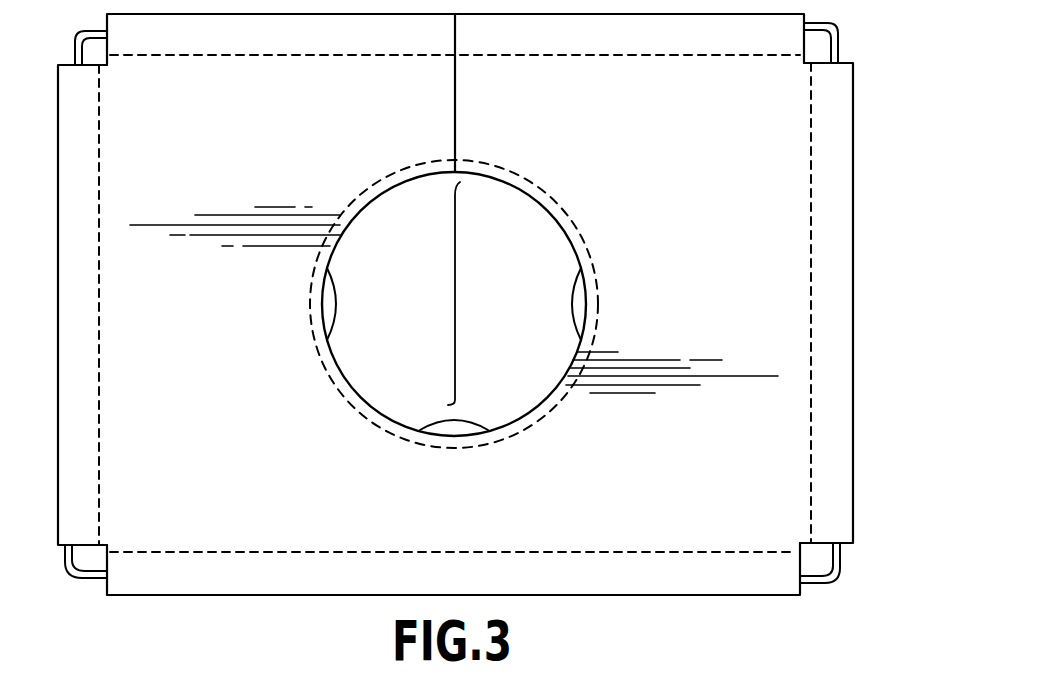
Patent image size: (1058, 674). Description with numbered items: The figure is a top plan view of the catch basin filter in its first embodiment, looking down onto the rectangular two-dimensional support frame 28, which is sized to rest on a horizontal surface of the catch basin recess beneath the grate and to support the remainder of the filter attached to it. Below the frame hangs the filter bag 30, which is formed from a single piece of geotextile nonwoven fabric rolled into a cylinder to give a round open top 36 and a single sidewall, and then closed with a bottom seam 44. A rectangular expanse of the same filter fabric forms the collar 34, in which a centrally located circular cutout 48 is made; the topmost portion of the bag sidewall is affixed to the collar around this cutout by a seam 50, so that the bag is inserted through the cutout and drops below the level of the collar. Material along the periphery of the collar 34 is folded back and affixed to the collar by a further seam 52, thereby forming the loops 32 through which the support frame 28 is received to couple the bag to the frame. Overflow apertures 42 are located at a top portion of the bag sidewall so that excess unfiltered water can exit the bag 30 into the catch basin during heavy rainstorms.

The support frame 28 is at (845, 567).
The filter bag 30 is at (388, 385).
The loops 32 is at (853, 263).
The collar 34 is at (718, 296).
The open top 36 is at (532, 298).
The overflow apertures 42 is at (337, 303).
The bottom seam 44 is at (455, 335).
The circular cutout 48 is at (543, 202).
The seam 50 is at (576, 222).
The seam 52 is at (100, 148).